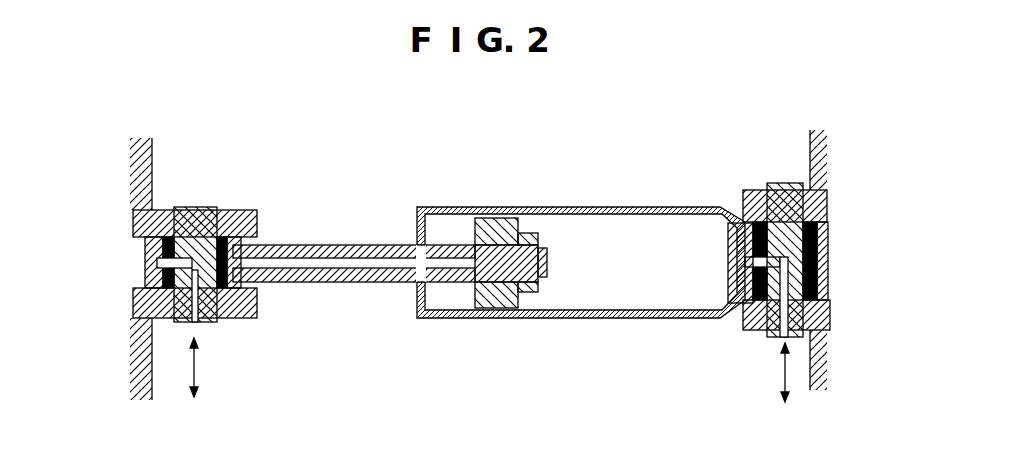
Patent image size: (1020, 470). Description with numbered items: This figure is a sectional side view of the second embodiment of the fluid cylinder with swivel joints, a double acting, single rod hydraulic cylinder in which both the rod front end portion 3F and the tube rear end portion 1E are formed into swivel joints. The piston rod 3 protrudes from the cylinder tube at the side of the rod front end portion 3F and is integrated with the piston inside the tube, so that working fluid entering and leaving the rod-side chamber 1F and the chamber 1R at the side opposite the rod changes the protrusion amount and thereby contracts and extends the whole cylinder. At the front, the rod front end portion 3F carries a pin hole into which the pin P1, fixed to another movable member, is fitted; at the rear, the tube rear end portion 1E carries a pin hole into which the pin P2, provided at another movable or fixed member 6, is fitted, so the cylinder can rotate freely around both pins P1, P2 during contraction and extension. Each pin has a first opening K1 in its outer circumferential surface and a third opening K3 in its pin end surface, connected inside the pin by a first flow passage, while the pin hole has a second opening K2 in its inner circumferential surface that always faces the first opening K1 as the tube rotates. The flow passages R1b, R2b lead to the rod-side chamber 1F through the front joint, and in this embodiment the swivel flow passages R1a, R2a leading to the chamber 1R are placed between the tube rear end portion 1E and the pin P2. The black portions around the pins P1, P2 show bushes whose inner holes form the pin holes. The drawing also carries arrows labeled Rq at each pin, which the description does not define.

The pin P1 is at (195, 206).
The pin P2 is at (783, 184).
The piston rod 3 is at (317, 244).
The rod front end portion 3F is at (250, 290).
The second flow passage R2b is at (340, 262).
The rod-side chamber 1F is at (448, 303).
The chamber at side opposite the rod 1R is at (600, 295).
The second flow passage R2a is at (733, 260).
The first opening K1 is at (166, 270).
The second opening K2 is at (160, 262).
The third opening K3 is at (198, 322).
The displacement direction Rq is at (198, 373).
The first flow passage R1b is at (178, 320).
The first flow passage R1a is at (787, 318).
The tube rear end portion 1E is at (830, 263).
The movable or fixed member 6 is at (810, 185).